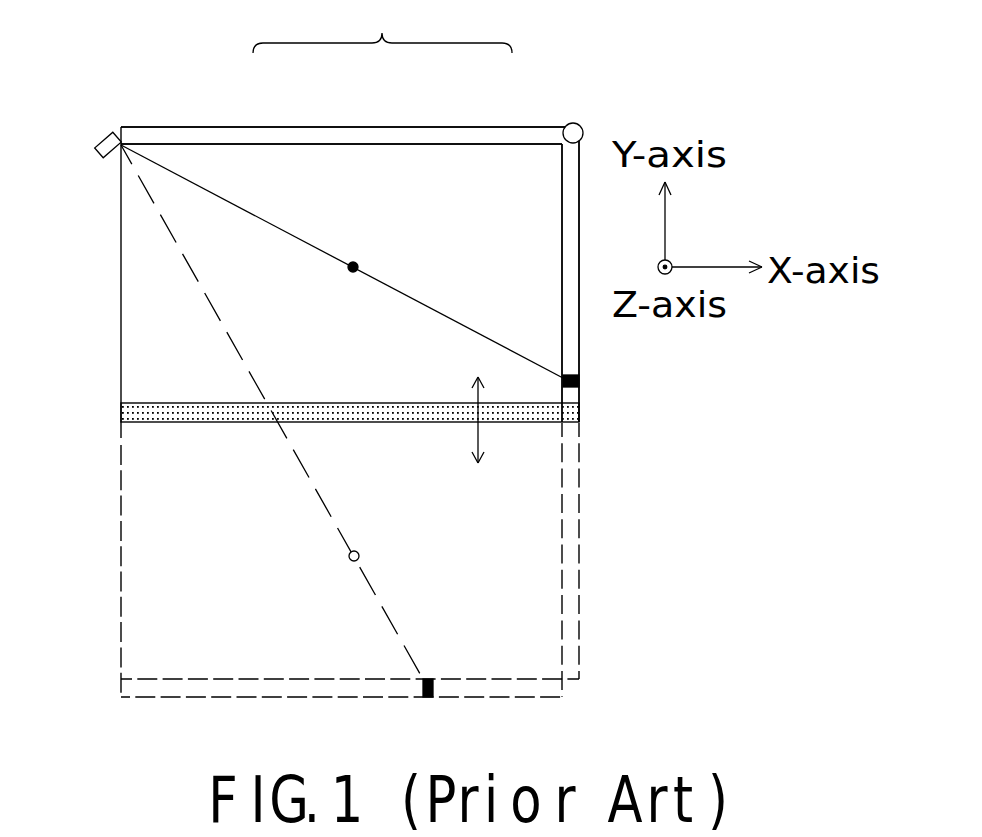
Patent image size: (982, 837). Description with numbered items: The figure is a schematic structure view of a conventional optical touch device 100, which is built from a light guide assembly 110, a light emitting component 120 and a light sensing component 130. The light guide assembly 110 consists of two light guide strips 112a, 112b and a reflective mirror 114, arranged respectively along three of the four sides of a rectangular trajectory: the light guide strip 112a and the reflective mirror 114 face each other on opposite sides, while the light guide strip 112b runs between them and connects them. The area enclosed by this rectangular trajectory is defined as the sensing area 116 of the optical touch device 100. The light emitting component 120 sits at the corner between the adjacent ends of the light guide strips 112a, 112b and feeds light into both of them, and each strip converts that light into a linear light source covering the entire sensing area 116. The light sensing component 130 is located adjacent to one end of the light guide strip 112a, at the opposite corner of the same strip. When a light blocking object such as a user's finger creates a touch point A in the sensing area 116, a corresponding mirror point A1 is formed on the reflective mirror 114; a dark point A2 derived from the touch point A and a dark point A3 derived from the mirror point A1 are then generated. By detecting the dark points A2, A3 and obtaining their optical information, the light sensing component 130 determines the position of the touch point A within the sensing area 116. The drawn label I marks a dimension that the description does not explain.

The optical touch device 100 is at (757, 742).
The light guide assembly 110 is at (382, 26).
The light guide strip 112a is at (302, 132).
The light guide strip 112b is at (568, 198).
The reflective mirror 114 is at (423, 413).
The sensing area 116 is at (208, 173).
The light emitting component 120 is at (575, 122).
The light sensing component 130 is at (108, 137).
The touch point A is at (359, 266).
The mirror point A1 is at (355, 549).
The dark point A2 is at (579, 383).
The dark point A3 is at (433, 690).
The distance I is at (484, 501).